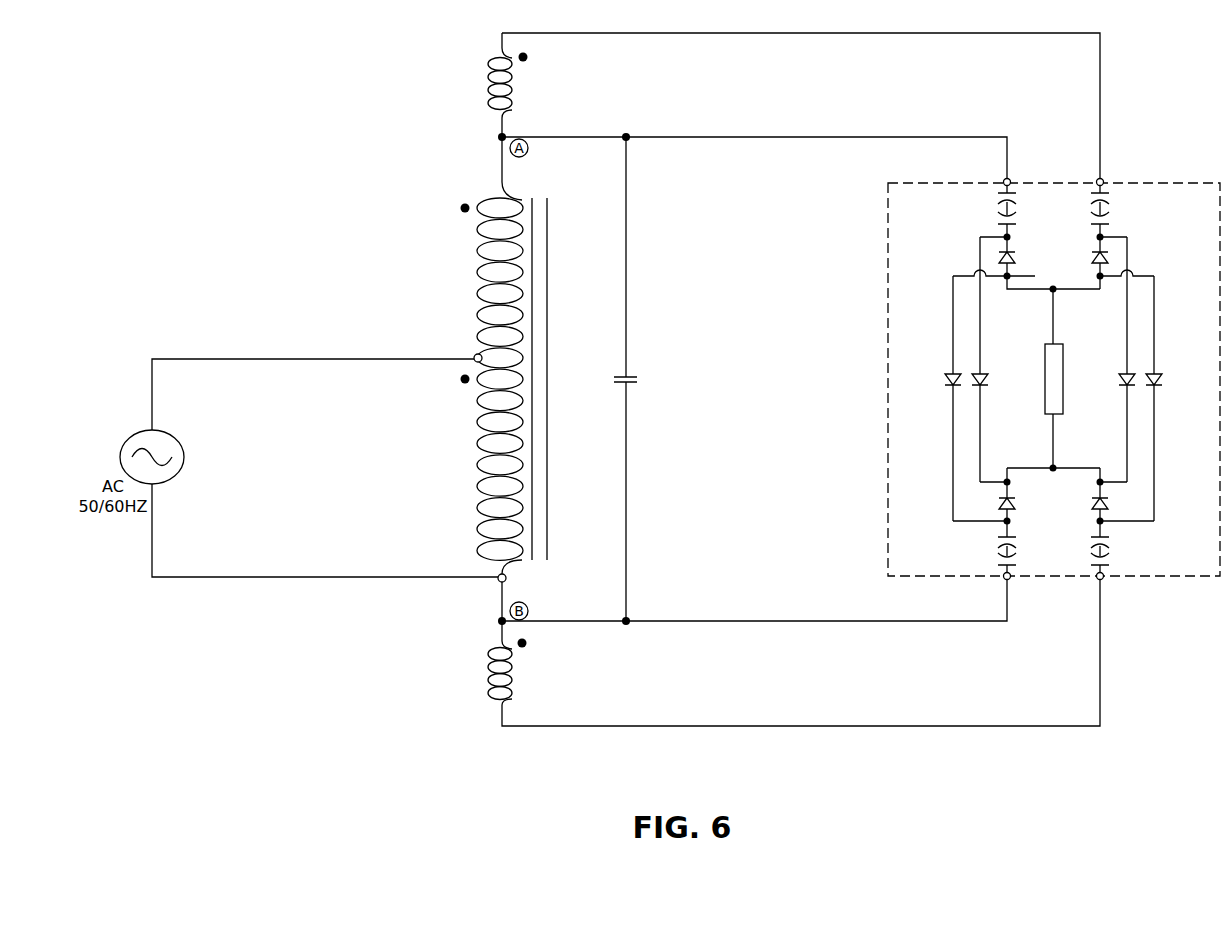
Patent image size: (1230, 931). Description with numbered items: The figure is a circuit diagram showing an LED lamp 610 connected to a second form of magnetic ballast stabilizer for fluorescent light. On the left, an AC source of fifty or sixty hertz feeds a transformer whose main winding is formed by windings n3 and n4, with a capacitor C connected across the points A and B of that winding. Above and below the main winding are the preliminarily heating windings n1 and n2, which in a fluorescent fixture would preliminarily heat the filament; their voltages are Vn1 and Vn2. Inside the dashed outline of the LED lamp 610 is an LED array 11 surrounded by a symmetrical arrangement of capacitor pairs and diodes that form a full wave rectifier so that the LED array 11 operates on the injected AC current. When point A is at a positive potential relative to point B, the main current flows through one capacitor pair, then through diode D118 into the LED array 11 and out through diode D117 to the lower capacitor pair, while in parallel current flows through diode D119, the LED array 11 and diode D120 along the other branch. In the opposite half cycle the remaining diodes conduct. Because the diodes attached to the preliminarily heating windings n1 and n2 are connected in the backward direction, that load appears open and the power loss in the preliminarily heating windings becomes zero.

The LED lamp 610 is at (895, 215).
The LED array 11 is at (1045, 360).
The preliminarily heating winding n1 is at (484, 83).
The preliminarily heating winding n2 is at (484, 673).
The transformer winding n3 is at (486, 275).
The transformer winding n4 is at (486, 471).
The capacitor C is at (633, 375).
The diode D117 is at (945, 398).
The diode D118 is at (989, 359).
The diode D119 is at (1119, 359).
The diode D120 is at (1163, 398).